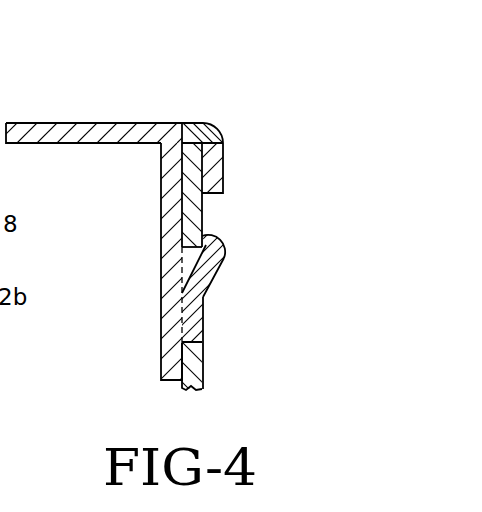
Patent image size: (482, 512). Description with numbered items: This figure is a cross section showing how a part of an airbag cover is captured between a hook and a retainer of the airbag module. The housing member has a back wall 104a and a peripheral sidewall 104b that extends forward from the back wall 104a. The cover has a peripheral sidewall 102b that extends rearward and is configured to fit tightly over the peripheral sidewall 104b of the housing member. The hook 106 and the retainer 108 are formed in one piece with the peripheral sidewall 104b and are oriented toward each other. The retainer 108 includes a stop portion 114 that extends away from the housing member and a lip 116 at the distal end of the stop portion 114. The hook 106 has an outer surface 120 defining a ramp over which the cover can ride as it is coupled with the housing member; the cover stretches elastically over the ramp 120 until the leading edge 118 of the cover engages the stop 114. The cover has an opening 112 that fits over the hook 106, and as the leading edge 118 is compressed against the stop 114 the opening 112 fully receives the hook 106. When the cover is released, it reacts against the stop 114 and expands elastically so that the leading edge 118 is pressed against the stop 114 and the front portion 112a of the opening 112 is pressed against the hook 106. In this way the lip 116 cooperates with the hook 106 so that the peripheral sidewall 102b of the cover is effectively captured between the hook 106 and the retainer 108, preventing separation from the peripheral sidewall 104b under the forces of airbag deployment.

The back wall 104a is at (33, 123).
The peripheral sidewall of the housing member 104b is at (170, 355).
The peripheral sidewall of the cover 102b is at (191, 196).
The retainer 108 is at (228, 133).
The stop portion 114 is at (189, 133).
The leading edge 118 is at (199, 140).
The lip 116 is at (223, 190).
The outer surface (ramp) 120 is at (223, 237).
The hook 106 is at (217, 264).
The opening 112 is at (195, 332).
The front portion of the opening 112a is at (196, 246).